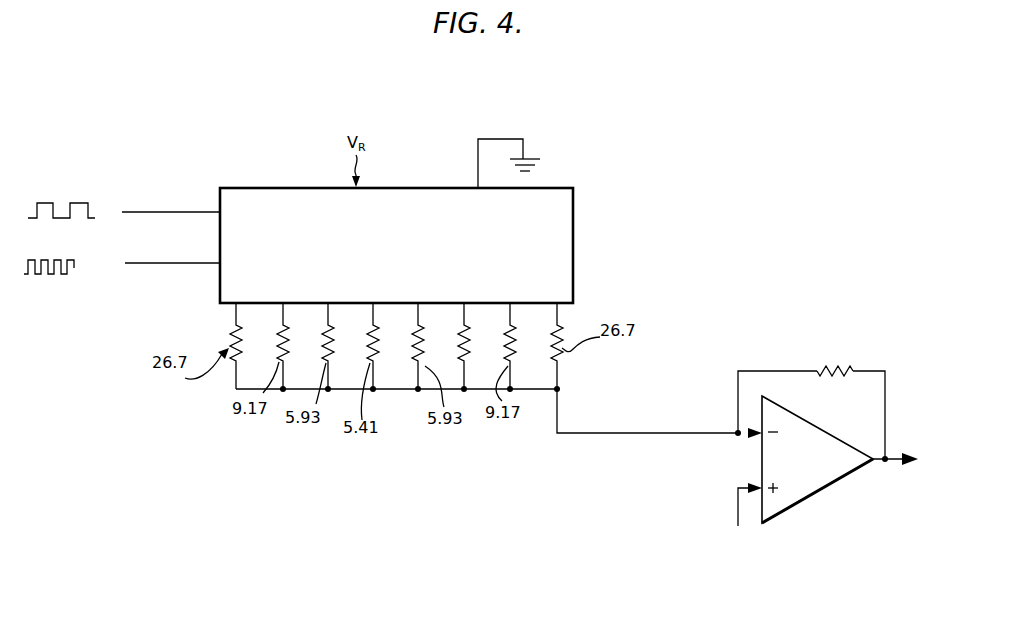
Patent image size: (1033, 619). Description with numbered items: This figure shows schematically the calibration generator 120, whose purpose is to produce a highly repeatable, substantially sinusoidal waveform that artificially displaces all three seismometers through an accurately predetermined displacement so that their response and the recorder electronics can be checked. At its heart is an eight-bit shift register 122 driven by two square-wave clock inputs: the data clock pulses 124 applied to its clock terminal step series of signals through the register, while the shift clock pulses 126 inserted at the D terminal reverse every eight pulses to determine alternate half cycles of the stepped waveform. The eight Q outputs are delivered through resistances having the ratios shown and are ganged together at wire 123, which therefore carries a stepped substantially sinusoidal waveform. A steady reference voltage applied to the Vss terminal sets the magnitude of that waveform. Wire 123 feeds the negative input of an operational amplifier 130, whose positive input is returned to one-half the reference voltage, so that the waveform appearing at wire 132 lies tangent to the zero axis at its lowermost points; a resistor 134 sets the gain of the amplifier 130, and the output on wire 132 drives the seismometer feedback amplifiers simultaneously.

The calibration generator 120 is at (457, 238).
The eight-bit shift register 122 is at (565, 250).
The wire 123 is at (653, 432).
The data clock pulses 124 is at (74, 265).
The shift clock pulses 126 is at (70, 199).
The operational amplifier 130 is at (825, 476).
The wire 132 is at (908, 455).
The resistor 134 is at (843, 366).